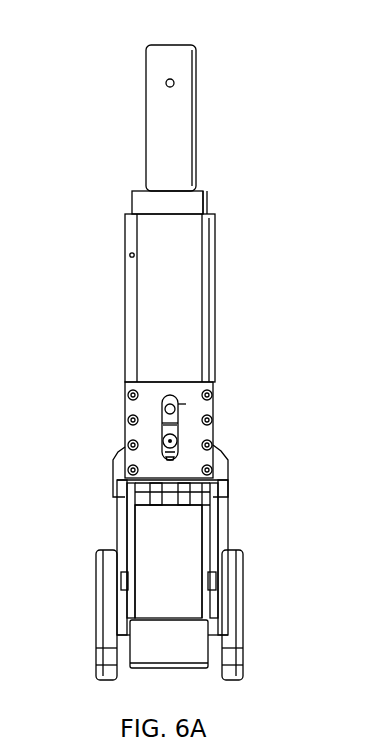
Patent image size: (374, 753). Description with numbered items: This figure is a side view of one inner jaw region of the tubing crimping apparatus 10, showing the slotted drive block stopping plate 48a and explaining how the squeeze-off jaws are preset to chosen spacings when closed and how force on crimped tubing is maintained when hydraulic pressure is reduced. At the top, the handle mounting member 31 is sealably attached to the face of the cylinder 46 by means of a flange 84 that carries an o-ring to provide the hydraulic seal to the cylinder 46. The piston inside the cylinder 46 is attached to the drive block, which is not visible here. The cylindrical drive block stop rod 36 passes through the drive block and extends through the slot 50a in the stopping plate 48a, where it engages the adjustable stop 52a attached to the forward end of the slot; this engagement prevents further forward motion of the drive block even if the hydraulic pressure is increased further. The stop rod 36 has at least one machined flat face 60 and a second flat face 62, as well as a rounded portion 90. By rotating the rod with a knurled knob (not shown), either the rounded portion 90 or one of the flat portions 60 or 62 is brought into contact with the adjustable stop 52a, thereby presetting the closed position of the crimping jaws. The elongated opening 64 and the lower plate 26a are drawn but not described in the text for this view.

The tubing crimping apparatus 10 is at (284, 326).
The handle mounting member 31 is at (182, 136).
The flange 84 is at (206, 186).
The cylinder 46 is at (184, 303).
The slotted drive block stopping plate 48a is at (147, 407).
The elongated slot 64 is at (175, 394).
The slot 50a is at (190, 403).
The machined flat face 60 is at (183, 424).
The machined flat face 62 is at (182, 440).
The drive block stop rod 36 is at (170, 442).
The rounded portion 90 is at (150, 451).
The adjustable stop 52a is at (160, 459).
The jaw plate 26a is at (189, 572).